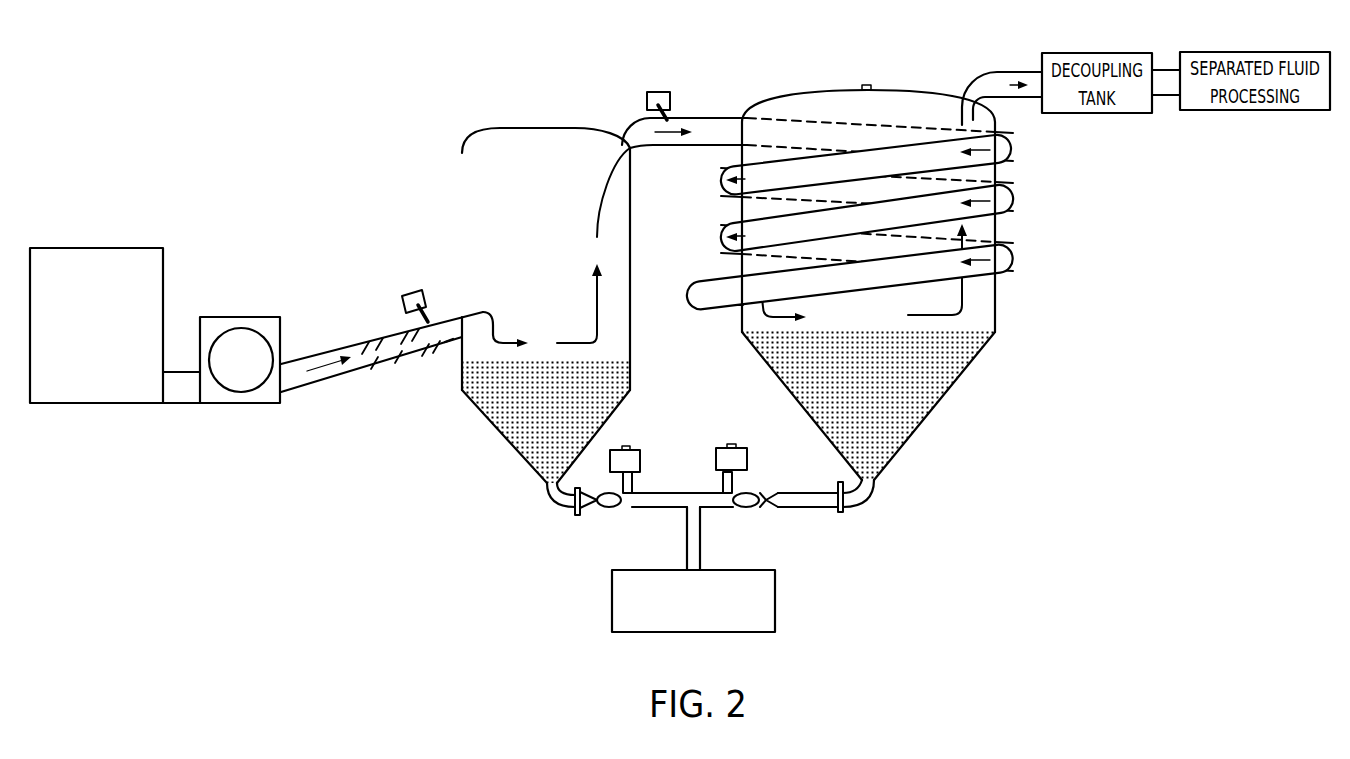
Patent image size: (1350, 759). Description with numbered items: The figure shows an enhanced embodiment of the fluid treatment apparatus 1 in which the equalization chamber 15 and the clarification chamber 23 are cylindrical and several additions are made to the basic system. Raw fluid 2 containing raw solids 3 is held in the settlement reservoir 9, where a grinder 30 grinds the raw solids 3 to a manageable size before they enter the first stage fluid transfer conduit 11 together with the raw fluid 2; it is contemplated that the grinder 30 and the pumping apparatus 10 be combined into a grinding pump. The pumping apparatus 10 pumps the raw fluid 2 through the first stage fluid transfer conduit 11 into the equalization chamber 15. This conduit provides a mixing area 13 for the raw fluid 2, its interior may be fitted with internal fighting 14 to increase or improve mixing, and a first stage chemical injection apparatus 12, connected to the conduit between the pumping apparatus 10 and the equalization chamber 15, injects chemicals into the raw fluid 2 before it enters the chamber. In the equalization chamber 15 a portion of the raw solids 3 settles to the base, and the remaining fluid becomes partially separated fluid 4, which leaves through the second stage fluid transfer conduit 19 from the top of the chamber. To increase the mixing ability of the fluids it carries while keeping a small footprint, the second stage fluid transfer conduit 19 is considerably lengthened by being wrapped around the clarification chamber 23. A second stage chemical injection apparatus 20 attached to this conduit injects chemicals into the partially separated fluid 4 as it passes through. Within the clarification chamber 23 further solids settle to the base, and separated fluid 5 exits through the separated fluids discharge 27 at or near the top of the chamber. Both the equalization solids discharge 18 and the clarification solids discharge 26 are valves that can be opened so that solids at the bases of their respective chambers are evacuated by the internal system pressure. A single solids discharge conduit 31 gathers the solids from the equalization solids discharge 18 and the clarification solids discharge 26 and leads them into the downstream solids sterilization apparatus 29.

The fluid treatment apparatus 1 is at (222, 102).
The raw fluid 2 is at (483, 313).
The raw solids 3 is at (507, 427).
The partially separated fluid 4 is at (652, 148).
The separated fluid 5 is at (1003, 73).
The settlement reservoir 9 is at (110, 404).
The pumping apparatus 10 is at (238, 329).
The first stage fluid transfer conduit 11 is at (406, 355).
The first stage chemical injection apparatus 12 is at (412, 290).
The mixing area 13 is at (448, 341).
The internal fighting 14 is at (362, 345).
The equalization chamber 15 is at (462, 202).
The equalization solids discharge 18 is at (548, 487).
The second stage fluid transfer conduit 19 is at (625, 139).
The second stage chemical injection apparatus 20 is at (655, 92).
The clarification chamber 23 is at (996, 322).
The clarification solids discharge 26 is at (873, 483).
The separated fluids discharge 27 is at (966, 84).
The solids sterilization apparatus 29 is at (612, 596).
The grinder 30 is at (271, 404).
The single solids discharge conduit 31 is at (685, 530).